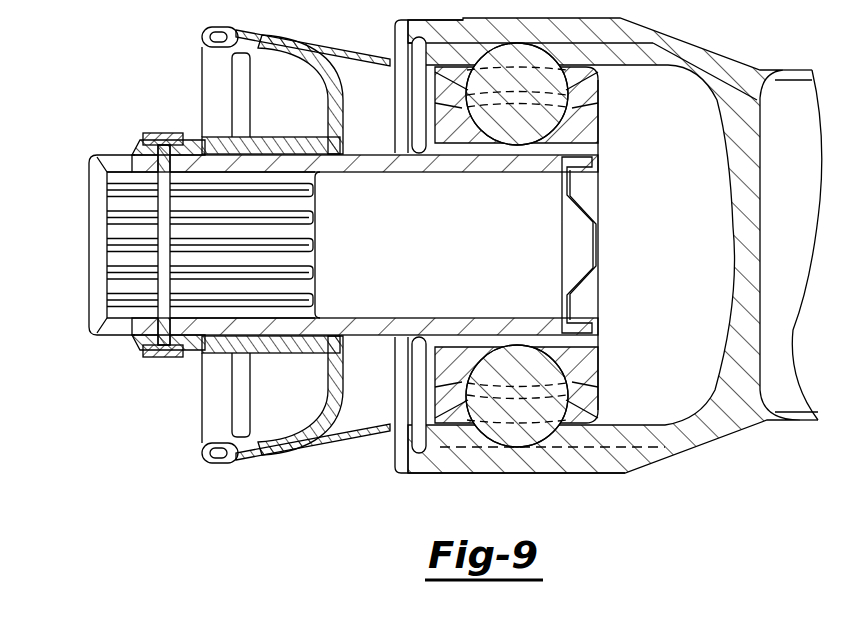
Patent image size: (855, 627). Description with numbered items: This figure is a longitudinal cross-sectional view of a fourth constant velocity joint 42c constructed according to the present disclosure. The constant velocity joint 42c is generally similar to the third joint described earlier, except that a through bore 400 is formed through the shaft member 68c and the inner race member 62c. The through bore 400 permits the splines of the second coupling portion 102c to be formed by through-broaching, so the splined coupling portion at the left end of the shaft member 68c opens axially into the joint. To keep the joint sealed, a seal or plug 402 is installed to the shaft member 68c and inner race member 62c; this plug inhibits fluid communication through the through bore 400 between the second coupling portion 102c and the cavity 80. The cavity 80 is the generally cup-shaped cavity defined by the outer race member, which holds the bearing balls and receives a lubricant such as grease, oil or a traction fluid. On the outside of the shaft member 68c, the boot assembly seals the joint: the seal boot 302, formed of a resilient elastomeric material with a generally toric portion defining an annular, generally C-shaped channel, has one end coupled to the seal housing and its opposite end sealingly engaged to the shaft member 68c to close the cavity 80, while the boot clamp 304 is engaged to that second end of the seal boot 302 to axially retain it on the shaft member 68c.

The constant velocity joint 42c is at (358, 478).
The inner race member 62c is at (560, 342).
The shaft member 68c is at (355, 325).
The cavity 80 is at (700, 200).
The second coupling portion 102c is at (97, 157).
The seal boot 302 is at (229, 135).
The boot clamp 304 is at (160, 133).
The through bore 400 is at (290, 285).
The seal or plug 402 is at (587, 208).